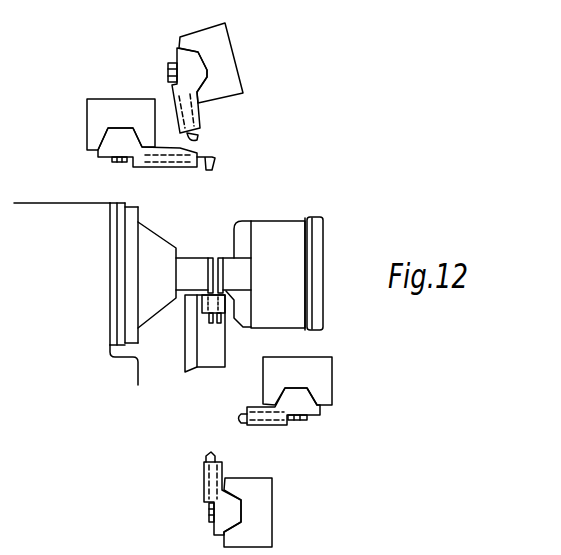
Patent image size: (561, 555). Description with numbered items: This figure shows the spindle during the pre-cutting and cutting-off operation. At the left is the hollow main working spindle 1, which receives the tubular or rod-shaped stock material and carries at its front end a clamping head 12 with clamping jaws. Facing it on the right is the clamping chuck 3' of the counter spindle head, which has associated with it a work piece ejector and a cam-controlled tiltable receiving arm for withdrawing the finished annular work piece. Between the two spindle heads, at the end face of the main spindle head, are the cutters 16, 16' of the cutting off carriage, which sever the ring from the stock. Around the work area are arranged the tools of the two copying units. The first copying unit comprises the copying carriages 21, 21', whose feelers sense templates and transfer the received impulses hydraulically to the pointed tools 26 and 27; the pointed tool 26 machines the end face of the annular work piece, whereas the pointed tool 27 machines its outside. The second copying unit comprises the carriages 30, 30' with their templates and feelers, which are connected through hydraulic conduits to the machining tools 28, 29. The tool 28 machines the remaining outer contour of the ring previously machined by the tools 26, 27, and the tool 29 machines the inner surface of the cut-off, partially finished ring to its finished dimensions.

The main working spindle 1 is at (60, 208).
The clamping chuck 3' is at (274, 265).
The clamping head 12 is at (153, 312).
The cutter 16 is at (209, 302).
The cutter 16' is at (213, 309).
The copying carriage 21 is at (316, 381).
The copying carriage 21' is at (270, 512).
The pointed tool 26 is at (241, 419).
The pointed tool 27 is at (207, 460).
The machining tool 28 is at (202, 134).
The machining tool 29 is at (215, 162).
The carriage 30 is at (225, 63).
The carriage 30' is at (121, 111).